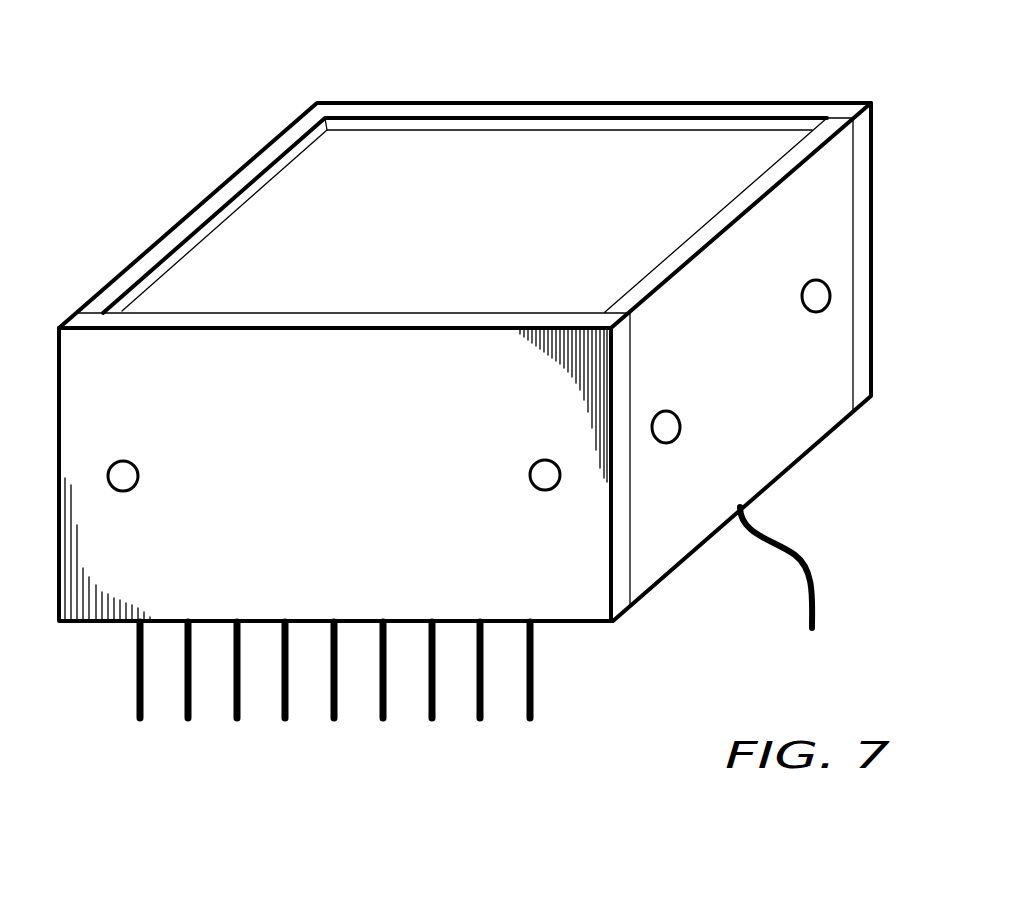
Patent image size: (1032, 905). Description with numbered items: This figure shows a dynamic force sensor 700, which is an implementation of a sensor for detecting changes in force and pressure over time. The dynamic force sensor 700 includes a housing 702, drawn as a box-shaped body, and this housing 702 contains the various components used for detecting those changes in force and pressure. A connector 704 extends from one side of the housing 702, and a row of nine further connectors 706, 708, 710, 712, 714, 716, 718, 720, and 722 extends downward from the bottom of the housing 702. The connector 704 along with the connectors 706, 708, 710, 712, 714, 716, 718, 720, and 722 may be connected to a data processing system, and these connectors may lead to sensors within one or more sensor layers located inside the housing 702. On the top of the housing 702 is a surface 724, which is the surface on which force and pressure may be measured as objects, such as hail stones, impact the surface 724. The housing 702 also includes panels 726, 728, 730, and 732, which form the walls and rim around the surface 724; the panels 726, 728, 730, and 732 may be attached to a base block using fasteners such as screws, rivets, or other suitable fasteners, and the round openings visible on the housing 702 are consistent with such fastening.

The dynamic force sensor 700 is at (241, 88).
The housing 702 is at (790, 450).
The connector 704 is at (814, 612).
The connector 706 is at (137, 672).
The connector 708 is at (187, 688).
The connector 710 is at (237, 688).
The connector 712 is at (285, 688).
The connector 714 is at (338, 688).
The connector 716 is at (386, 688).
The connector 718 is at (435, 688).
The connector 720 is at (486, 688).
The connector 722 is at (535, 672).
The surface 724 is at (495, 232).
The panel 726 is at (186, 217).
The panel 728 is at (760, 113).
The panel 730 is at (815, 300).
The panel 732 is at (268, 181).